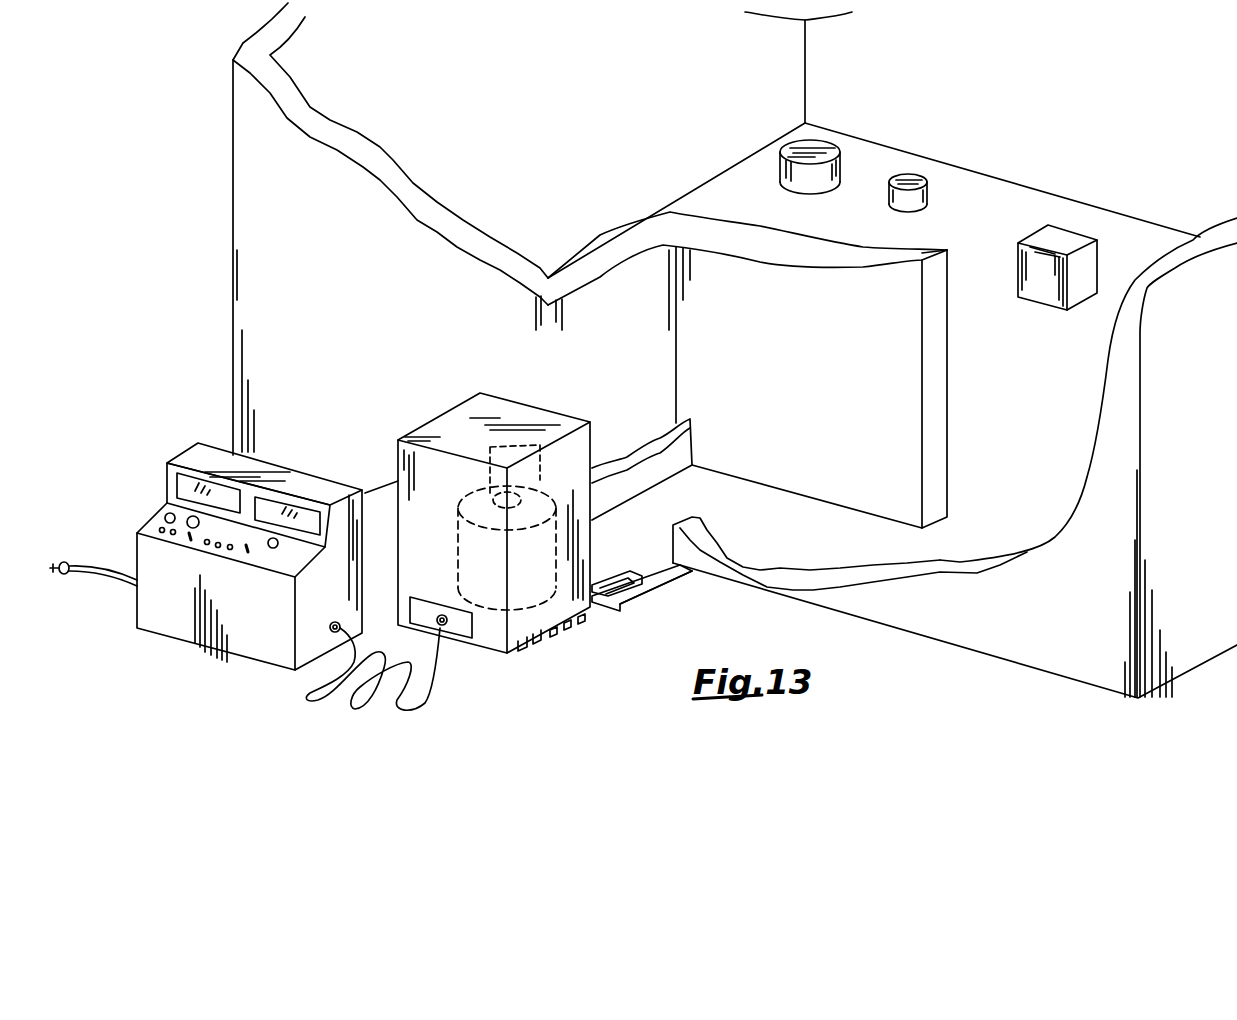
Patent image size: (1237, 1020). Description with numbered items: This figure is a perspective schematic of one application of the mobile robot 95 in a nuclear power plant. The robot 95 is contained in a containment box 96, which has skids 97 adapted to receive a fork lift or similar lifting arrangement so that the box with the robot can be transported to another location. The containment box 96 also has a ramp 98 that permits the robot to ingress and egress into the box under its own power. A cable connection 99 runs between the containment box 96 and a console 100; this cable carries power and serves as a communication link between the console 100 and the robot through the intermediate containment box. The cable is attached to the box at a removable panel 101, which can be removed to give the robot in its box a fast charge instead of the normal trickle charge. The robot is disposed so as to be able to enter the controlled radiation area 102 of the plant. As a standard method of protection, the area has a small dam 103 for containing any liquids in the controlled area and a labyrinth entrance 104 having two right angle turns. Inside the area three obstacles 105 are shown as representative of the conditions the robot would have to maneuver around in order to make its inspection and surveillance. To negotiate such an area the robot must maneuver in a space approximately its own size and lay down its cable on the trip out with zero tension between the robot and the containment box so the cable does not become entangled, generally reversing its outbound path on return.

The mobile robot 95 is at (585, 617).
The containment box 96 is at (508, 657).
The skids 97 is at (528, 657).
The ramp 98 is at (598, 575).
The cable connection 99 is at (352, 708).
The console 100 is at (268, 625).
The removable panel 101 is at (458, 626).
The controlled radiation area 102 is at (1027, 382).
The small dam 103 is at (657, 593).
The labyrinth entrance 104 is at (805, 543).
The obstacles 105 is at (905, 173).